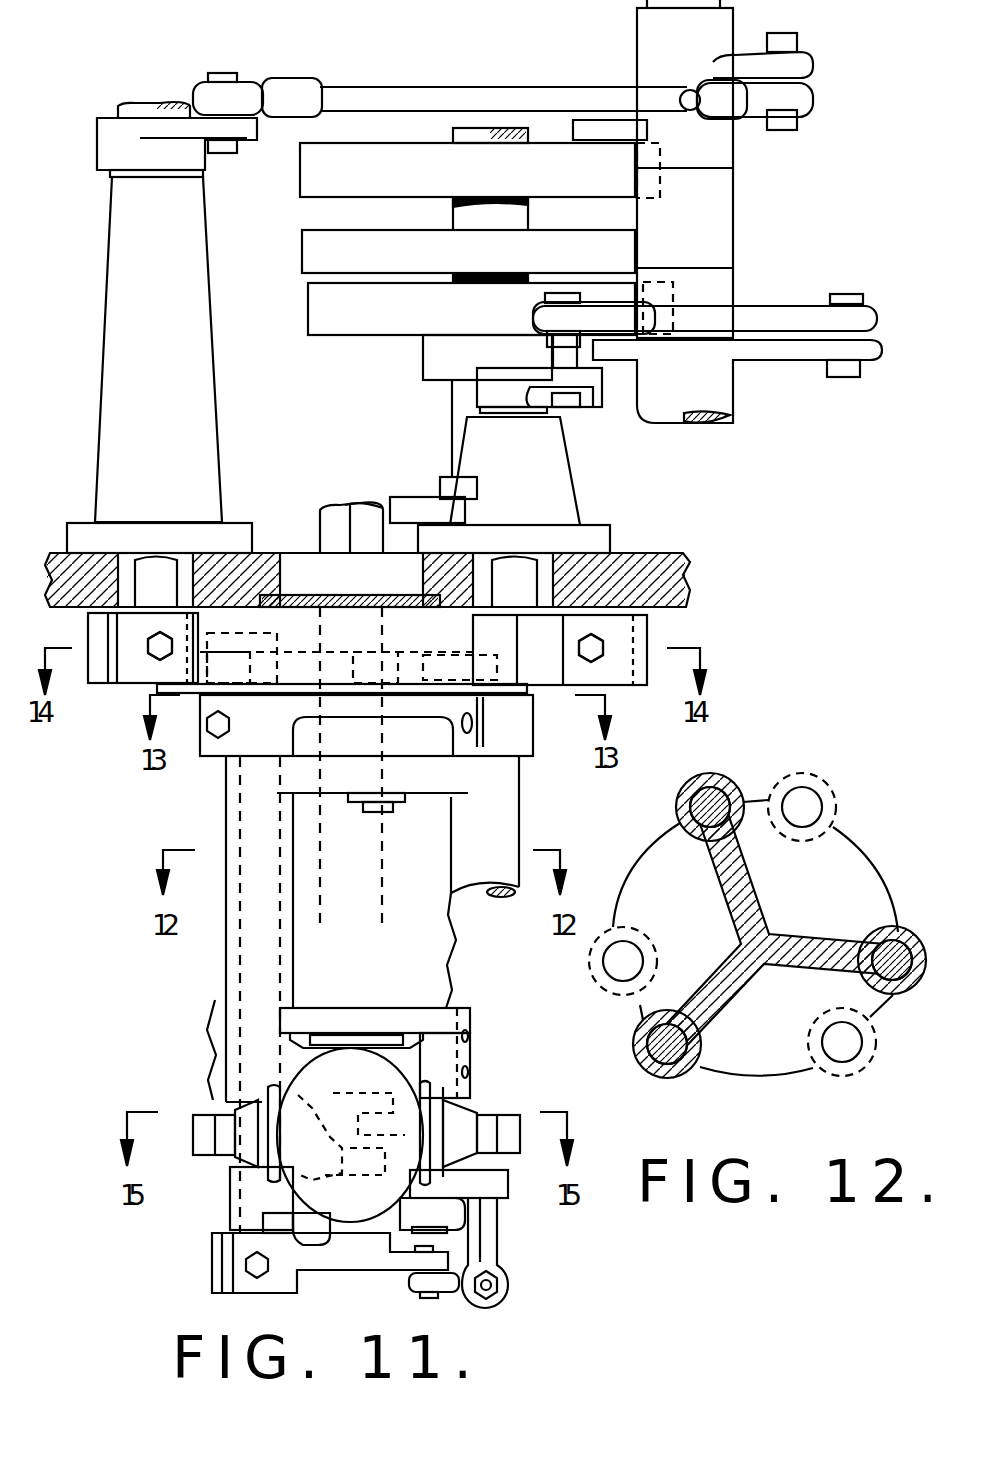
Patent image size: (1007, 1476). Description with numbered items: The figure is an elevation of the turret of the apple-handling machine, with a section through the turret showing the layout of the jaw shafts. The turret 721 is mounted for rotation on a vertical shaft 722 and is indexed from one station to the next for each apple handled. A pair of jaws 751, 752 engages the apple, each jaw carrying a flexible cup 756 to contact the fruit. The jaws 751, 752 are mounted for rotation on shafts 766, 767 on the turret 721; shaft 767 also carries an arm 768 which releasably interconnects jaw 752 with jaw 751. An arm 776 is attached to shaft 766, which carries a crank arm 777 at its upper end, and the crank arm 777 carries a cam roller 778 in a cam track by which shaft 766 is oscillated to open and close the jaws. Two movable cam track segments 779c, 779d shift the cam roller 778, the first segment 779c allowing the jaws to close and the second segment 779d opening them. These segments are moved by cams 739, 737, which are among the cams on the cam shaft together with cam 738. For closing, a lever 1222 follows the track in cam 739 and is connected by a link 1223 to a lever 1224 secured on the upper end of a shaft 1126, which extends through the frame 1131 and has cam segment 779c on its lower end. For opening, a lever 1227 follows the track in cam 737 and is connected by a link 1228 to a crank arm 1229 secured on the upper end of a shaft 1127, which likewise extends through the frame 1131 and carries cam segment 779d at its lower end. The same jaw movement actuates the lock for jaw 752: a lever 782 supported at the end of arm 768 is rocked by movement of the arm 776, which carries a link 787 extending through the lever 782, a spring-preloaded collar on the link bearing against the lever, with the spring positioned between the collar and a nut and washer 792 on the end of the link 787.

In FIG. 11, the link 1228 is at (405, 86).
In FIG. 11, the lever 1227 is at (812, 66).
In FIG. 11, the crank arm 1229 is at (245, 145).
In FIG. 11, the cam 737 is at (302, 195).
In FIG. 11, the cam 738 is at (302, 256).
In FIG. 11, the cam 739 is at (308, 315).
In FIG. 11, the link 1223 is at (778, 312).
In FIG. 11, the lever 1222 is at (787, 350).
In FIG. 11, the lever 1224 is at (590, 392).
In FIG. 11, the vertical shaft 722 is at (335, 505).
In FIG. 11, the shaft 1127 is at (150, 565).
In FIG. 11, the shaft 1126 is at (515, 568).
In FIG. 11, the frame 1131 is at (688, 575).
In FIG. 11, the cam roller 778 is at (382, 665).
In FIG. 11, the cam track segment 779d is at (188, 664).
In FIG. 11, the cam track segment 779c is at (495, 670).
In FIG. 11, the crank arm 777 is at (343, 710).
In FIG. 11, the turret 721 is at (224, 968).
In FIG. 12, the turret 721 is at (858, 853).
In FIG. 11, the shaft 766 is at (242, 792).
In FIG. 12, the shaft 766 is at (728, 790).
In FIG. 11, the shaft 767 is at (470, 1042).
In FIG. 12, the shaft 767 is at (808, 795).
In FIG. 11, the jaw 751 is at (225, 1125).
In FIG. 11, the jaw 752 is at (510, 1114).
In FIG. 11, the flexible cup 756 is at (295, 1100).
In FIG. 11, the arm 768 is at (502, 1200).
In FIG. 11, the lever 782 is at (495, 1245).
In FIG. 11, the nut and washer 792 is at (497, 1288).
In FIG. 11, the link 787 is at (452, 1283).
In FIG. 11, the arm 776 is at (366, 1262).